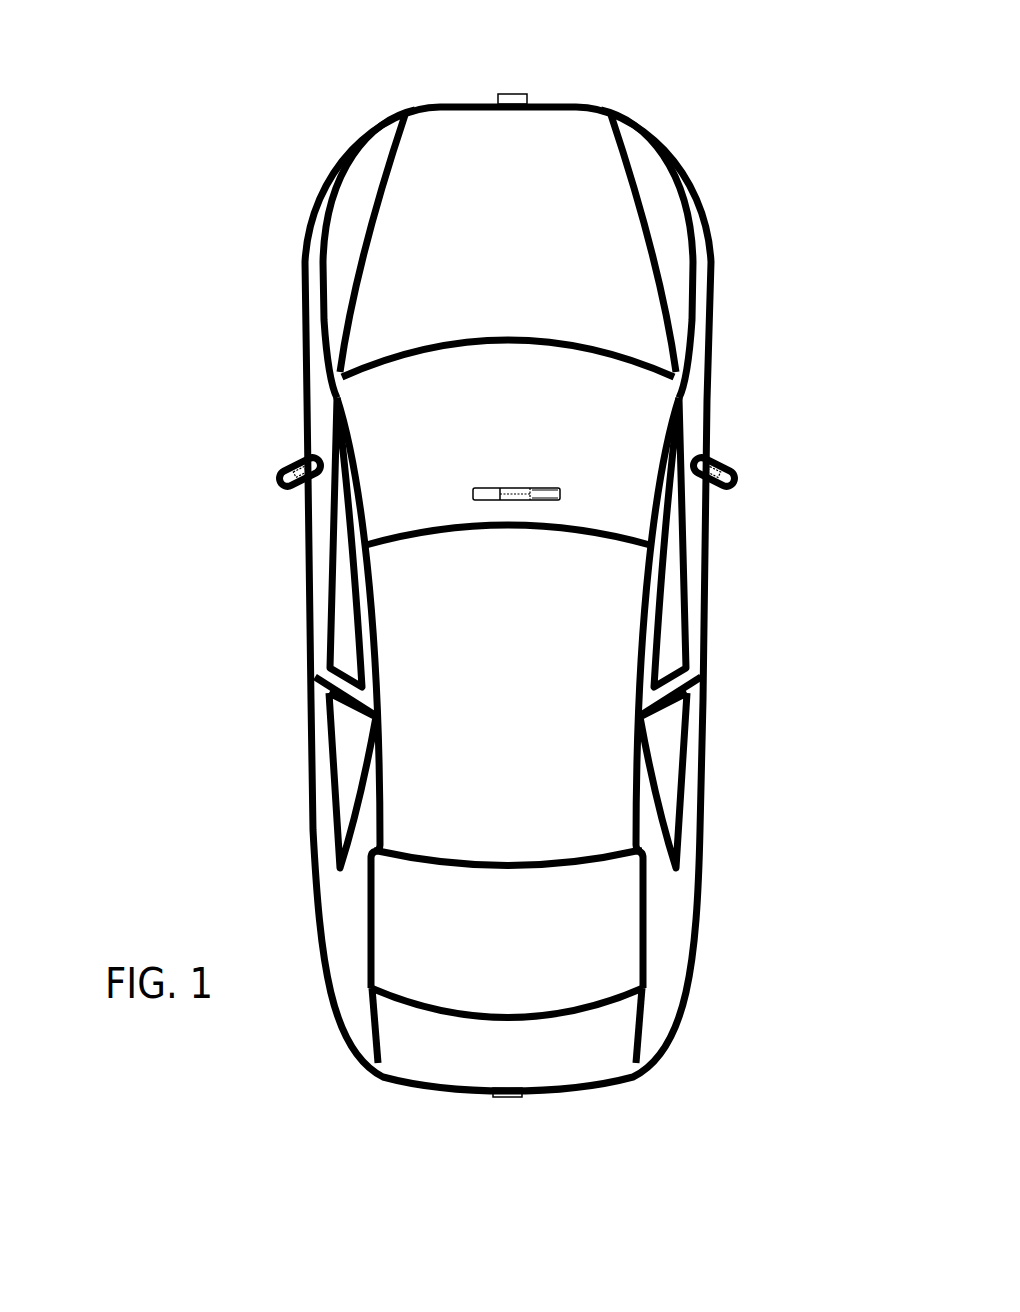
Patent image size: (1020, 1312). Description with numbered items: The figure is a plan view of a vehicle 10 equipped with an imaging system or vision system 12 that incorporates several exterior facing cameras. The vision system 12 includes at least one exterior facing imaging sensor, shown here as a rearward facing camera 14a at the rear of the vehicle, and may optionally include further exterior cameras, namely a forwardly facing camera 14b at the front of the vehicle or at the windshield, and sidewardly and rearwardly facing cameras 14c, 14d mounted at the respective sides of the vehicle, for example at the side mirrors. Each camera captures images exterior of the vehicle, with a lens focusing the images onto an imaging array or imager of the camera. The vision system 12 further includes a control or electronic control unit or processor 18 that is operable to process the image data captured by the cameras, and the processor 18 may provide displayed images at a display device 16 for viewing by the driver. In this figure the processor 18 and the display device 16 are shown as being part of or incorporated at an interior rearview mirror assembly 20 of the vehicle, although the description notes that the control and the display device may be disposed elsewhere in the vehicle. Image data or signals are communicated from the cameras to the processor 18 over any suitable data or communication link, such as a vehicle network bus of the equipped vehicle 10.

The vehicle 10 is at (243, 194).
The vision system 12 is at (446, 1123).
The rearward facing camera 14a is at (512, 1097).
The forwardly facing camera 14b is at (523, 91).
The sidewardly/rearwardly facing camera 14c is at (293, 467).
The sidewardly/rearwardly facing camera 14d is at (723, 467).
The display device 16 is at (487, 489).
The electronic control unit 18 is at (513, 487).
The interior rearview mirror assembly 20 is at (556, 488).